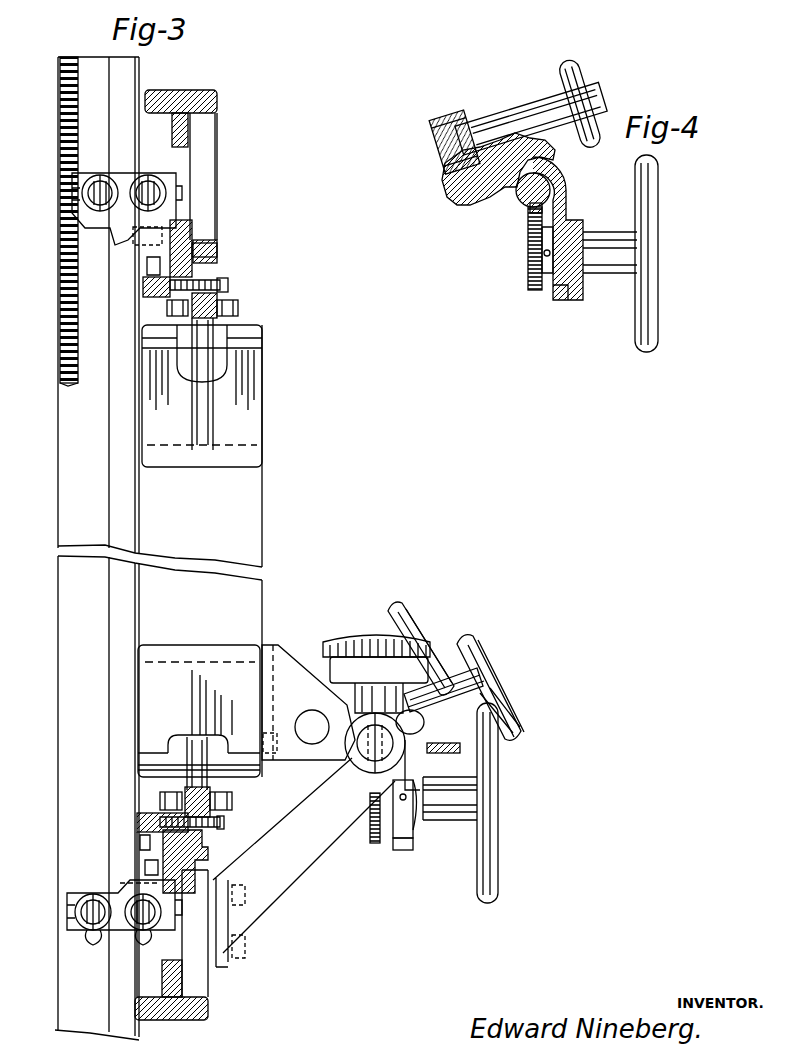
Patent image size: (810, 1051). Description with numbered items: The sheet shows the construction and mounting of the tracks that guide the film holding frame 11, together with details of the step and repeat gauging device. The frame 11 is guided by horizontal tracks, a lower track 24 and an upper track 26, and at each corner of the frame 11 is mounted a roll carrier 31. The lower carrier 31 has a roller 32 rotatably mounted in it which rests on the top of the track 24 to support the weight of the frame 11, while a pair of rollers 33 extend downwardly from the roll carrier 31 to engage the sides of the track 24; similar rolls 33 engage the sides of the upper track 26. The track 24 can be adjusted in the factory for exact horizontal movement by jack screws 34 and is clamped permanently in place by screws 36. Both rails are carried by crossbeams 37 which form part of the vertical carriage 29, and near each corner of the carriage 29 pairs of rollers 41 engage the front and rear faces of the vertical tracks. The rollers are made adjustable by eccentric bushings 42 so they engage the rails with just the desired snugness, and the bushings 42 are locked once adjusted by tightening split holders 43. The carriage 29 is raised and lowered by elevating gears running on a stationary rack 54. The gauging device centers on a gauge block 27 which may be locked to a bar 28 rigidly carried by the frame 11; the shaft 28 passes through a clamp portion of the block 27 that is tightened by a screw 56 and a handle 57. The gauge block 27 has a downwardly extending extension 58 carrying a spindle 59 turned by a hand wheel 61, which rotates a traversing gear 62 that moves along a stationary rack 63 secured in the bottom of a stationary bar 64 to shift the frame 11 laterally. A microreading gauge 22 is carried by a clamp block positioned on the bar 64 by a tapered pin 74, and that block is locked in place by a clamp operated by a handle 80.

In FIG. 3, the film holding frame 11 is at (262, 505).
In FIG. 3, the stationary rack 54 is at (62, 338).
In FIG. 3, the crossbeam 37 is at (217, 102).
In FIG. 3, the vertical carriage 29 is at (228, 207).
In FIG. 3, the eccentric bushing 42 is at (147, 176).
In FIG. 3, the upper track 26 is at (220, 300).
In FIG. 3, the rollers 33 is at (167, 307).
In FIG. 3, the roll carrier 31 is at (245, 655).
In FIG. 3, the roller 32 is at (200, 747).
In FIG. 3, the microreading gauge 22 is at (350, 639).
In FIG. 3, the handle 57 is at (415, 603).
In FIG. 4, the handle 57 is at (598, 98).
In FIG. 3, the handle 80 is at (490, 648).
In FIG. 3, the tapered pin 74 is at (437, 753).
In FIG. 3, the hand wheel 61 is at (497, 857).
In FIG. 4, the hand wheel 61 is at (653, 250).
In FIG. 3, the traversing gear 62 is at (370, 845).
In FIG. 4, the traversing gear 62 is at (528, 253).
In FIG. 3, the lower track 24 is at (235, 797).
In FIG. 3, the clamping screws 36 is at (222, 820).
In FIG. 3, the jack screws 34 is at (207, 845).
In FIG. 3, the split holder 43 is at (67, 903).
In FIG. 3, the rollers 41 is at (78, 940).
In FIG. 4, the screw 56 is at (448, 123).
In FIG. 4, the gauge block 27 is at (525, 101).
In FIG. 4, the stationary bar 64 is at (550, 183).
In FIG. 4, the extension 58 is at (567, 198).
In FIG. 4, the stationary rack 63 is at (528, 213).
In FIG. 4, the spindle 59 is at (577, 250).
In FIG. 4, the bar 28 is at (463, 193).